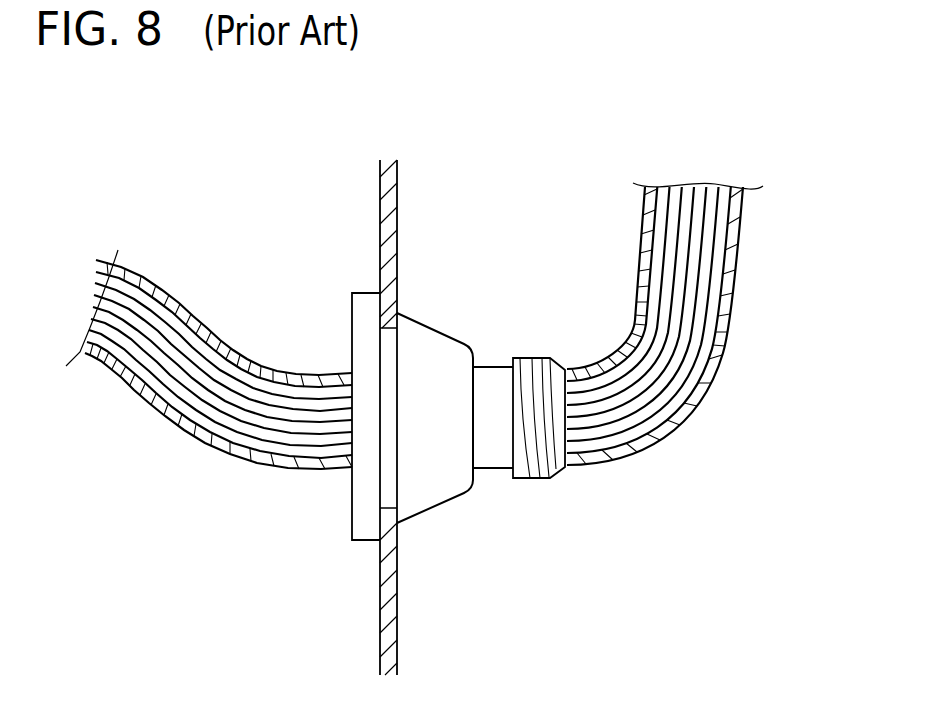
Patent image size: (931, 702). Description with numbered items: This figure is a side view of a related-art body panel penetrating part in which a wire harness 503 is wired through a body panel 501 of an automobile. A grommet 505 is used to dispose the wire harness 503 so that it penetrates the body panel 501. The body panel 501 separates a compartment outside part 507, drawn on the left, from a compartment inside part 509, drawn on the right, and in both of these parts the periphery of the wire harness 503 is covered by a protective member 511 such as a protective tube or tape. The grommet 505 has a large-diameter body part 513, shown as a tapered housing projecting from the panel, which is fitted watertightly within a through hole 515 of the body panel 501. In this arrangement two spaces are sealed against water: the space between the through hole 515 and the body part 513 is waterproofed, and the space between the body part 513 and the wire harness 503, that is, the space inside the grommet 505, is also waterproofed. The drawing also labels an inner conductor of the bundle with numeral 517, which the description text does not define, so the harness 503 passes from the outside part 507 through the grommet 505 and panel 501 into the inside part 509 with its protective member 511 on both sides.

The body panel 501 is at (398, 188).
The wire harness 503 is at (196, 303).
The grommet 505 is at (431, 414).
The compartment outside part 507 is at (209, 396).
The compartment inside part 509 is at (574, 500).
The protective member 511 is at (738, 282).
The body part 513 is at (443, 494).
The through hole 515 is at (390, 507).
The conductor wire 517 is at (141, 352).